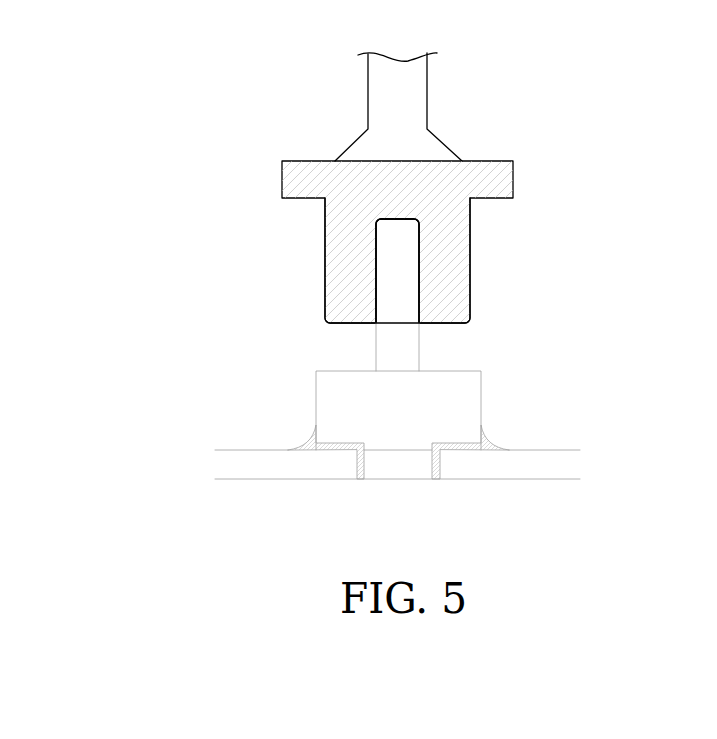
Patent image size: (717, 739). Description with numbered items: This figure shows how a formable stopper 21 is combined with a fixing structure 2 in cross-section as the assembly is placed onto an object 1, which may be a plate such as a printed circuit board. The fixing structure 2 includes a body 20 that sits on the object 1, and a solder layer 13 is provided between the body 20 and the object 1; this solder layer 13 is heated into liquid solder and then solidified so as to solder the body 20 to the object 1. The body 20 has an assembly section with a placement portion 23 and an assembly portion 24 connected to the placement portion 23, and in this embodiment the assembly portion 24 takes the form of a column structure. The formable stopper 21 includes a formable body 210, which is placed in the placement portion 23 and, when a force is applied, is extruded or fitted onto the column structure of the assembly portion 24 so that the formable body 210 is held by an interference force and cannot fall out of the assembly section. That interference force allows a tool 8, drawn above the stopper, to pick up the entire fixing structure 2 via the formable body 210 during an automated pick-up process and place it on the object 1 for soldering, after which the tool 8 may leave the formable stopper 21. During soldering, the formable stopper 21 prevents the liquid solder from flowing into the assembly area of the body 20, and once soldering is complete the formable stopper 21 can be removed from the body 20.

The object 1 is at (513, 472).
The solder layer 13 is at (488, 438).
The fixing structure 2 is at (396, 235).
The body 20 is at (470, 386).
The formable stopper 21 is at (527, 150).
The formable body 210 is at (360, 213).
The placement portion 23 is at (405, 273).
The assembly portion 24 is at (418, 305).
The tool 8 is at (377, 98).